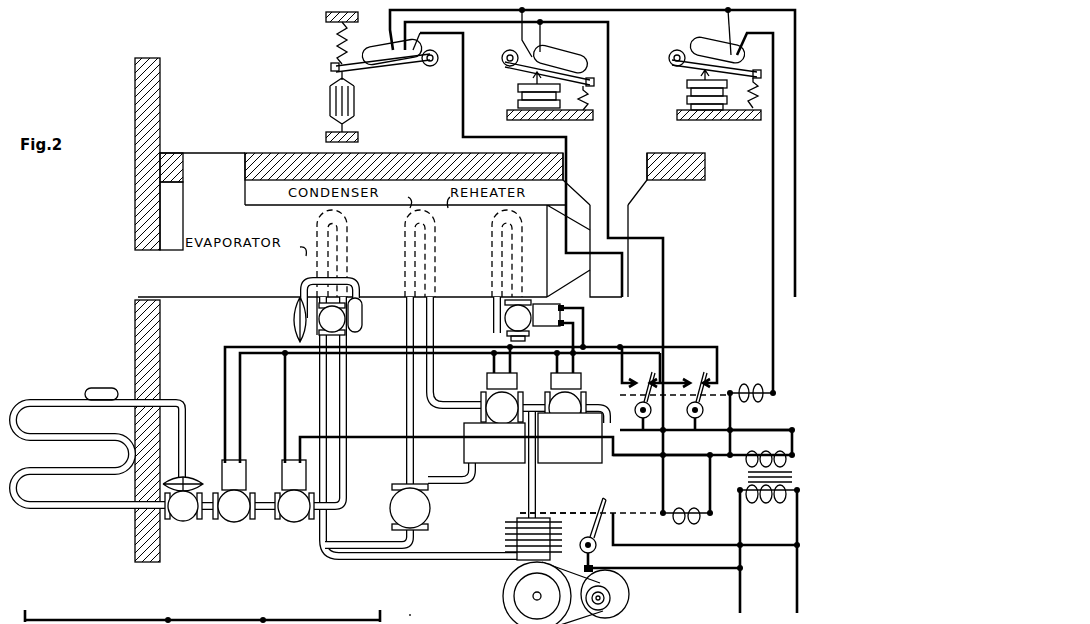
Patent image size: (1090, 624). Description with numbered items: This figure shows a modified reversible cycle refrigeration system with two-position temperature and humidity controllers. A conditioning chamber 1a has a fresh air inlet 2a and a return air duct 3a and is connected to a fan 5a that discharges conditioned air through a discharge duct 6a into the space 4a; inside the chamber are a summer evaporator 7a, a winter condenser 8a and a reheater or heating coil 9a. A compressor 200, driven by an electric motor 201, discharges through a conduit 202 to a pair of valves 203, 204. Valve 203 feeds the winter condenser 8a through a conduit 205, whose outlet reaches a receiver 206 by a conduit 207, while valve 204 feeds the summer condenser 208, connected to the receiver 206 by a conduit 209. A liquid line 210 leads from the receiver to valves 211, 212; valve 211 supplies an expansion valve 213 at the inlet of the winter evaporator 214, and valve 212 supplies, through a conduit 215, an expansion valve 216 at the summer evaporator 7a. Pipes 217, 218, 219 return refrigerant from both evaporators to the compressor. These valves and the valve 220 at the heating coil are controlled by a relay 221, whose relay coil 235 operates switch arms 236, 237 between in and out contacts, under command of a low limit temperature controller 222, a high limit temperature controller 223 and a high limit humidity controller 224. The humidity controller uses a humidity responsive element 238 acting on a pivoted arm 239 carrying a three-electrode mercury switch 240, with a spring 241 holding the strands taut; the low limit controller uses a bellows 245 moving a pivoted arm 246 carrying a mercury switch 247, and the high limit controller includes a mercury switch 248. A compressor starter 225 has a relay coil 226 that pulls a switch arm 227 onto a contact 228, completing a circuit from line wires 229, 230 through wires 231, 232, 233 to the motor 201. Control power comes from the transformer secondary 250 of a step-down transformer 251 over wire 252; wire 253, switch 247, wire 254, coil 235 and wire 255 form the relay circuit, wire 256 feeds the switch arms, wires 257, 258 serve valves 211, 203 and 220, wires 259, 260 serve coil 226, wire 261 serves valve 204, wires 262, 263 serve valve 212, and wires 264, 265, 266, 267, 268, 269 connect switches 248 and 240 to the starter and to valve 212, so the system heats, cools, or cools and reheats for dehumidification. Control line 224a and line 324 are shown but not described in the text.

The conditioning chamber 1a is at (246, 285).
The fresh air inlet 2a is at (160, 300).
The return air duct 3a is at (171, 216).
The space 4a is at (420, 154).
The fan 5a is at (625, 228).
The discharge duct 6a is at (635, 190).
The summer evaporator 7a is at (312, 258).
The winter condenser 8a is at (402, 250).
The reheater or heating coil 9a is at (488, 250).
The compressor 200 is at (500, 534).
The electric motor 201 is at (632, 600).
The conduit 202 is at (512, 487).
The valve 203 is at (486, 396).
The valve 204 is at (572, 388).
The conduit 205 is at (480, 334).
The receiver 206 is at (425, 507).
The conduit 207 is at (404, 388).
The summer condenser 208 is at (548, 474).
The conduit 209 is at (452, 476).
The liquid line 210 is at (388, 540).
The valve 211 is at (226, 468).
The valve 212 is at (276, 482).
The expansion valve 213 is at (196, 524).
The winter evaporator 214 is at (76, 512).
The conduit 215 is at (316, 384).
The expansion valve 216 is at (296, 326).
The pipe 217 is at (199, 400).
The pipe 218 is at (346, 386).
The pipe 219 is at (338, 472).
The valve 220 is at (553, 310).
The relay 221 is at (751, 344).
The low limit temperature controller 222 is at (665, 78).
The high limit temperature controller 223 is at (513, 80).
The high limit humidity controller 224 is at (312, 72).
The control line 224a is at (407, 606).
The compressor starter 225 is at (586, 506).
The relay coil 226 is at (702, 496).
The switch arm 227 is at (598, 518).
The contact 228 is at (620, 492).
The line wire 229 is at (796, 582).
The line wire 230 is at (741, 597).
The wire 231 is at (670, 544).
The wire 232 is at (596, 557).
The wire 233 is at (690, 565).
The relay coil 235 is at (764, 392).
The switch arm 236 is at (709, 401).
The switch arm 237 is at (659, 401).
The humidity responsive element 238 is at (328, 98).
The pivoted arm 239 is at (398, 72).
The mercury switch 240 is at (392, 40).
The spring 241 is at (335, 45).
The bellows 245 is at (686, 98).
The pivoted arm 246 is at (670, 52).
The mercury switch 247 is at (702, 44).
The mercury switch 248 is at (580, 54).
The transformer secondary 250 is at (776, 458).
The step-down transformer 251 is at (742, 477).
The wire 252 is at (792, 420).
The wire 253 is at (724, 14).
The wire 254 is at (773, 218).
The wire 255 is at (745, 424).
The wire 256 is at (700, 436).
The wire 257 is at (222, 353).
The wire 258 is at (642, 448).
The wire 259 is at (662, 478).
The wire 260 is at (686, 483).
The wire 261 is at (672, 376).
The wire 262 is at (392, 434).
The wire 263 is at (283, 376).
The wire 264 is at (660, 8).
The wire 265 is at (517, 32).
The wire 266 is at (553, 35).
The wire 267 is at (658, 280).
The wire 268 is at (437, 46).
The wire 269 is at (462, 112).
The control line 324 is at (118, 614).